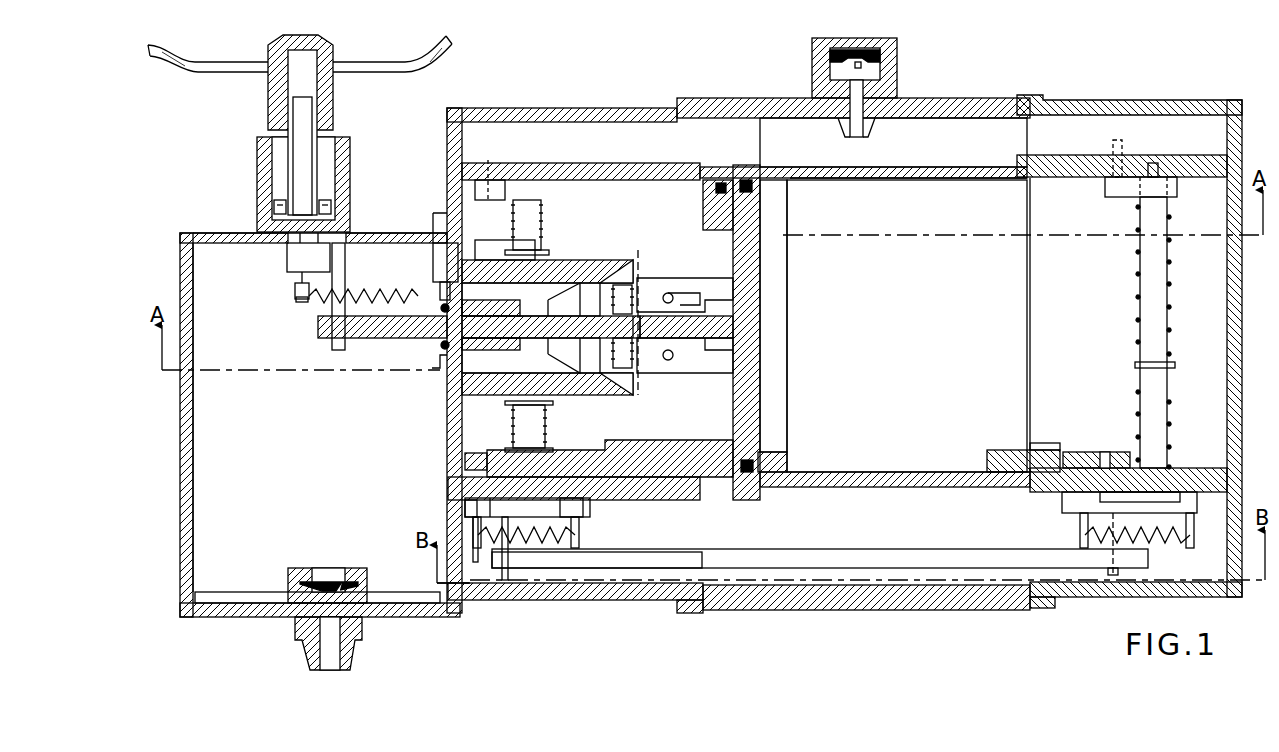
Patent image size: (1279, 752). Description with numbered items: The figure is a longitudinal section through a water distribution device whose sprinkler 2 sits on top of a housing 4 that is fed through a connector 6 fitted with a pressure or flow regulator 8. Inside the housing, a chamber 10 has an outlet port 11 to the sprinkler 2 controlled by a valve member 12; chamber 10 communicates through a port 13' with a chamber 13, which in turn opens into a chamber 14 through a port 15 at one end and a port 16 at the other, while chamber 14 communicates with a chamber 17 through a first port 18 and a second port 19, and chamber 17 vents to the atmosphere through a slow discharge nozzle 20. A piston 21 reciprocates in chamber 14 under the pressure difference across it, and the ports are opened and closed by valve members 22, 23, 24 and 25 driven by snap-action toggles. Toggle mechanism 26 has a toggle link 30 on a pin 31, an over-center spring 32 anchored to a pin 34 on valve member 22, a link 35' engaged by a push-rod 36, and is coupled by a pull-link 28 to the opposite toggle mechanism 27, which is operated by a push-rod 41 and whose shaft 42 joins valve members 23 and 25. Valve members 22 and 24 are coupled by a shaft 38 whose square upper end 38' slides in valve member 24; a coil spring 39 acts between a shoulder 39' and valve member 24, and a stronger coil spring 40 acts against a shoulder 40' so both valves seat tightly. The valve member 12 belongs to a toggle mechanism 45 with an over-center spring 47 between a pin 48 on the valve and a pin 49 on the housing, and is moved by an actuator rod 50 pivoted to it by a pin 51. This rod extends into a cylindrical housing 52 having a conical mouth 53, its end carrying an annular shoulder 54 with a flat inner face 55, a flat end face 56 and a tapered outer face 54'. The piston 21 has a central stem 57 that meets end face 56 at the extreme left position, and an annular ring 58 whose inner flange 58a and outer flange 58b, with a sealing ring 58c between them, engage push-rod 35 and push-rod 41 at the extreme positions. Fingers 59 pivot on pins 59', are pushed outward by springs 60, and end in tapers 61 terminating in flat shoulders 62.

The sprinkler 2 is at (398, 66).
The housing 4 is at (180, 555).
The connector 6 is at (352, 628).
The pressure-regulator or flow-regulator 8 is at (302, 568).
The chamber 10 is at (316, 423).
The outlet port 11 is at (258, 233).
The valve member 12 is at (287, 264).
The chamber 13 is at (739, 557).
The port 13' is at (447, 547).
The chamber 14 is at (908, 325).
The port 15 is at (450, 485).
The port 16 is at (1102, 460).
The chamber 17 is at (893, 142).
The first port 18 is at (490, 175).
The second port 19 is at (1115, 165).
The pressure-regulated slow discharge nozzle 20 is at (890, 86).
The piston 21 is at (760, 232).
The valve member 22 is at (465, 508).
The valve member 23 is at (1075, 506).
The valve member 24 is at (447, 200).
The valve member 25 is at (1120, 190).
The toggle mechanism 26 is at (580, 540).
The toggle mechanism 27 is at (1070, 520).
The pull-link 28 is at (758, 560).
The toggle link 30 is at (583, 510).
The pin 31 is at (524, 508).
The over-centered spring 32 is at (540, 545).
The pin 34 is at (475, 570).
The push-rod 35 is at (610, 446).
The link 35' is at (483, 447).
The push-rod 36 is at (510, 583).
The shaft 38 is at (546, 425).
The upper end of shaft 38' is at (738, 355).
The coil spring 39 is at (543, 225).
The shoulder 39' is at (548, 247).
The coil spring 40 is at (543, 437).
The shoulder 40' is at (560, 403).
The push-rod 41 is at (1000, 452).
The shaft 42 is at (1148, 337).
The toggle mechanism 45 is at (298, 305).
The over-center spring 47 is at (365, 290).
The pin 48 is at (295, 290).
The pin 49 is at (410, 248).
The actuator rod 50 is at (394, 338).
The pin 51 is at (336, 350).
The cylindrical housing 52 is at (445, 368).
The conical-shaped mouth 53 is at (635, 260).
The annular shoulder 54 is at (645, 371).
The conically-tapered outer face 54' is at (553, 247).
The flat inner annular face 55 is at (612, 262).
The flat end face 56 is at (672, 258).
The central stem 57 is at (750, 330).
The annular ring 58 is at (768, 178).
The inner flange 58a is at (690, 168).
The outer flange 58b is at (795, 178).
The sealing ring 58c is at (730, 185).
The fingers 59 is at (531, 299).
The pins 59' is at (735, 314).
The springs 60 is at (642, 300).
The conically tapered end faces 61 is at (545, 303).
The flat annular shoulders 62 is at (530, 352).